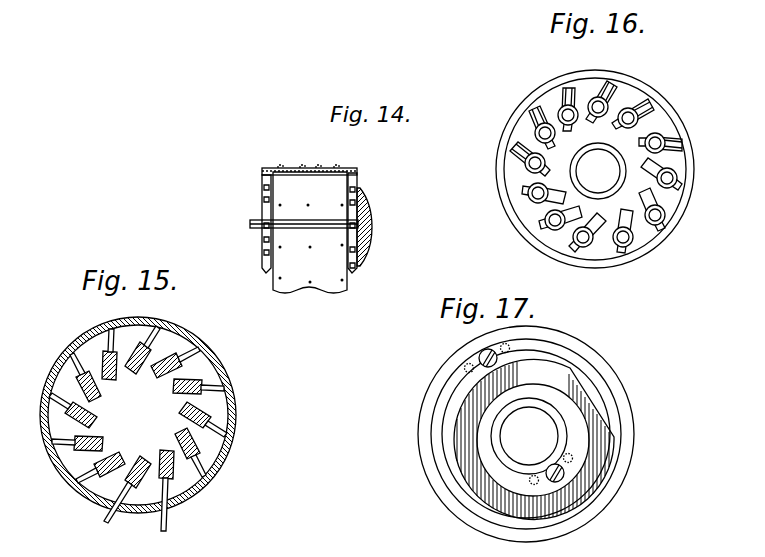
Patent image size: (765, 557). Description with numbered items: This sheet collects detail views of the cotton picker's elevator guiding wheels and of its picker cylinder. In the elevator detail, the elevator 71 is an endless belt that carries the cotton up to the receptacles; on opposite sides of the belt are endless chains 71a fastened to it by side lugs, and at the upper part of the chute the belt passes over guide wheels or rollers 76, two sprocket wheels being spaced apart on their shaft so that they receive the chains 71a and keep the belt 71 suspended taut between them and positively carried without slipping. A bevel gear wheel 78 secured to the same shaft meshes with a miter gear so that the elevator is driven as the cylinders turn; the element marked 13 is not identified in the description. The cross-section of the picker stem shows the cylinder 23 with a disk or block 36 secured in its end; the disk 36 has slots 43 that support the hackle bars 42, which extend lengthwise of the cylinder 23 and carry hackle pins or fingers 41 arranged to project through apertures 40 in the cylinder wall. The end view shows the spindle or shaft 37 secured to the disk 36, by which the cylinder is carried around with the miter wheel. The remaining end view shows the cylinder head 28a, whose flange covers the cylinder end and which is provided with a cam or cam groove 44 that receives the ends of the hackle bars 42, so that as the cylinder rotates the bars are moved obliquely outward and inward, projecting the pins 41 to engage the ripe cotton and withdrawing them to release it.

In FIG. 14, the top bar 13 is at (318, 167).
In FIG. 14, the elevator 71 is at (310, 232).
In FIG. 14, the endless chains 71a is at (357, 174).
In FIG. 14, the guide wheels or rollers 76 is at (378, 205).
In FIG. 14, the bevel gear wheel 78 is at (372, 236).
In FIG. 15, the disk or block 36 is at (138, 415).
In FIG. 16, the disk or block 36 is at (590, 122).
In FIG. 15, the apertures 40 is at (113, 516).
In FIG. 15, the hackle pins or fingers 41 is at (226, 436).
In FIG. 16, the hackle pins or fingers 41 is at (617, 267).
In FIG. 15, the hackle bar 42 is at (102, 447).
In FIG. 15, the slot 43 is at (170, 452).
In FIG. 16, the slot 43 is at (646, 196).
In FIG. 15, the cylinder 23 is at (92, 497).
In FIG. 16, the cylinder 23 is at (570, 260).
In FIG. 16, the spindle or shaft 37 is at (598, 171).
In FIG. 17, the cam or cam groove 44 is at (560, 466).
In FIG. 17, the cylinder head 28a is at (621, 472).